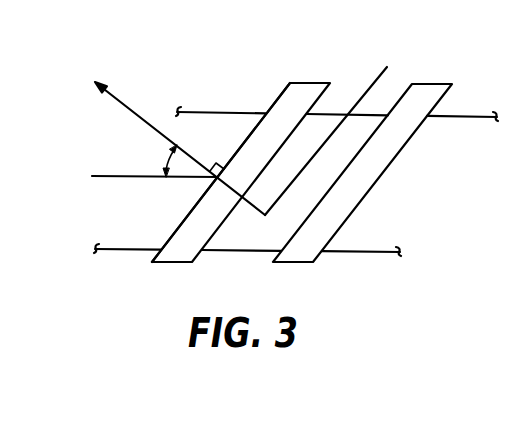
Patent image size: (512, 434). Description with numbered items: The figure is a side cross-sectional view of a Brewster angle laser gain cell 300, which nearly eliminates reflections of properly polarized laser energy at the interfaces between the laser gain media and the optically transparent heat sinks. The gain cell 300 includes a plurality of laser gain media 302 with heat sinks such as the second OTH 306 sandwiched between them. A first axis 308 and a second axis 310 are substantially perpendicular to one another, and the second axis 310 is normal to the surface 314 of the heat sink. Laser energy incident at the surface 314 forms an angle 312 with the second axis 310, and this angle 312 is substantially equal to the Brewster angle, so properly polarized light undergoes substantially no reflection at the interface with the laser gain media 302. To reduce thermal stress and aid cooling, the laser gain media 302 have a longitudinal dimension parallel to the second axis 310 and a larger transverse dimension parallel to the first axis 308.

The laser gain cell 300 is at (277, 161).
The laser gain media 302 is at (217, 127).
The second OTH 306 is at (172, 263).
The first axis 308 is at (374, 82).
The second axis 310 is at (121, 103).
The angle 312 is at (170, 150).
The surface 314 is at (177, 228).